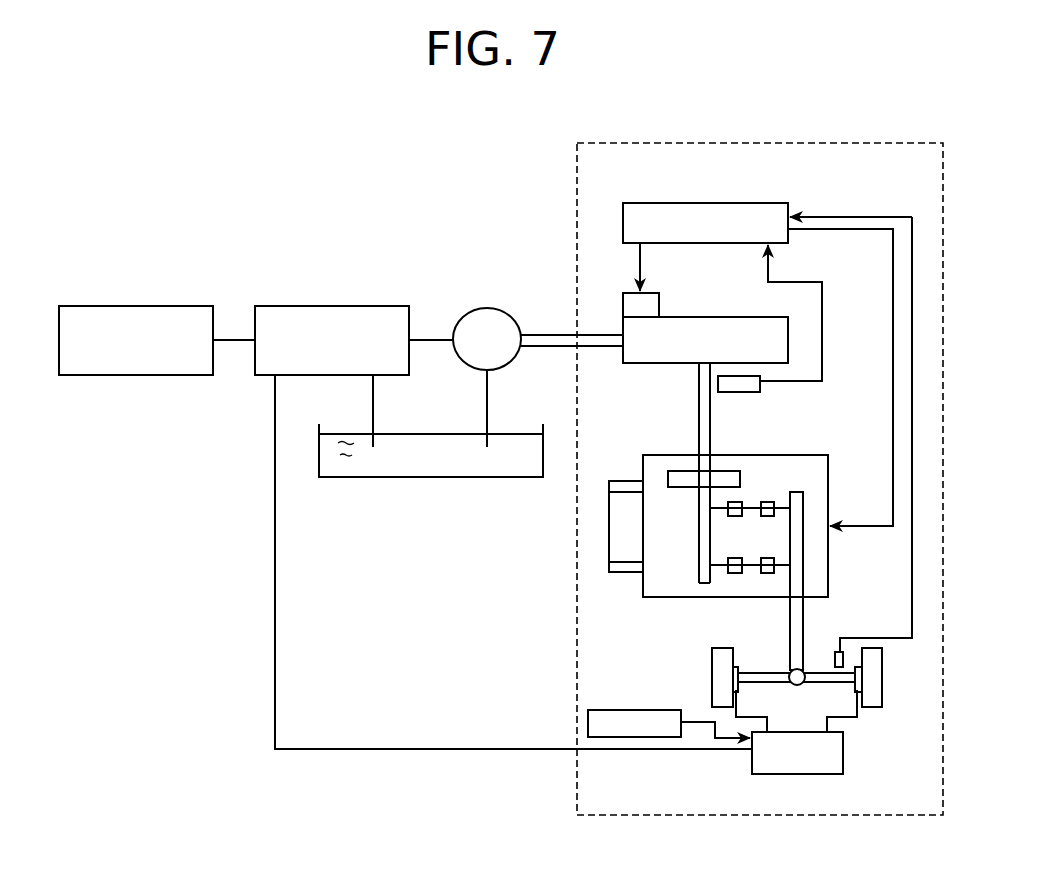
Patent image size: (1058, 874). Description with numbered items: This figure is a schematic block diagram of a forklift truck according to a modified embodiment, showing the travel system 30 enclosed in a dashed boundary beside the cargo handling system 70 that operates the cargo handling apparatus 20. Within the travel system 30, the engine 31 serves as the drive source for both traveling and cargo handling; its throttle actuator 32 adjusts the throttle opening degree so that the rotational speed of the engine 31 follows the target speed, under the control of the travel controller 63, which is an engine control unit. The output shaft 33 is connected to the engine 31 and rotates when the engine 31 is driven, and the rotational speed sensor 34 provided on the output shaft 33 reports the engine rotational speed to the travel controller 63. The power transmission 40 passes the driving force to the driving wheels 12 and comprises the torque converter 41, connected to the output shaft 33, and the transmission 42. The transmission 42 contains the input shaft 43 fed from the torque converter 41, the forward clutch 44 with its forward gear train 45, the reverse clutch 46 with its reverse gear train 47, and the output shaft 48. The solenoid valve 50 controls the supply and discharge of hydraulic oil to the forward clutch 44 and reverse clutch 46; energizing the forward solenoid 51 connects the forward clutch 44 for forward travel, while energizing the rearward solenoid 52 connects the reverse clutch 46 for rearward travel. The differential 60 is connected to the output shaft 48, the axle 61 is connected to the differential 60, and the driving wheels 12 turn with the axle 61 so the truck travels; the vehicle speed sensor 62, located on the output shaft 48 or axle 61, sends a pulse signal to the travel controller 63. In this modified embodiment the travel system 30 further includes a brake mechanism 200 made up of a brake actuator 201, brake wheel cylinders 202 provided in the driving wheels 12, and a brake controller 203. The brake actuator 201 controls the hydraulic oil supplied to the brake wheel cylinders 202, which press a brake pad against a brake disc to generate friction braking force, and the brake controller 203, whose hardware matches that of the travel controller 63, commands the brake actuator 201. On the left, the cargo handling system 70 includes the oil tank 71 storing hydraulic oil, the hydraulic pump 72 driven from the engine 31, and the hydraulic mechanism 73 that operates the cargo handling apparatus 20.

The driving wheels 12 is at (712, 690).
The cargo handling apparatus 20 is at (167, 306).
The travel system 30 is at (913, 142).
The engine 31 is at (752, 317).
The throttle actuator 32 is at (659, 305).
The output shaft 33 is at (699, 410).
The rotational speed sensor 34 is at (760, 386).
The power transmission 40 is at (828, 478).
The torque converter 41 is at (683, 471).
The transmission 42 is at (812, 535).
The input shaft 43 is at (699, 540).
The forward clutch 44 is at (738, 502).
The forward gear train 45 is at (768, 502).
The reverse clutch 46 is at (736, 573).
The reverse gear train 47 is at (768, 573).
The output shaft 48 is at (803, 605).
The solenoid valve 50 is at (609, 543).
The forward solenoid 51 is at (628, 481).
The rearward solenoid 52 is at (627, 572).
The differential 60 is at (805, 690).
The axle 61 is at (765, 683).
The vehicle speed sensor 62 is at (790, 670).
The travel controller 63 is at (750, 203).
The cargo handling system 70 is at (353, 570).
The oil tank 71 is at (395, 477).
The hydraulic pump 72 is at (484, 308).
The hydraulic mechanism 73 is at (363, 306).
The brake mechanism 200 is at (882, 729).
The brake actuator 201 is at (752, 760).
The brake wheel cylinders 202 is at (733, 672).
The brake controller 203 is at (620, 710).